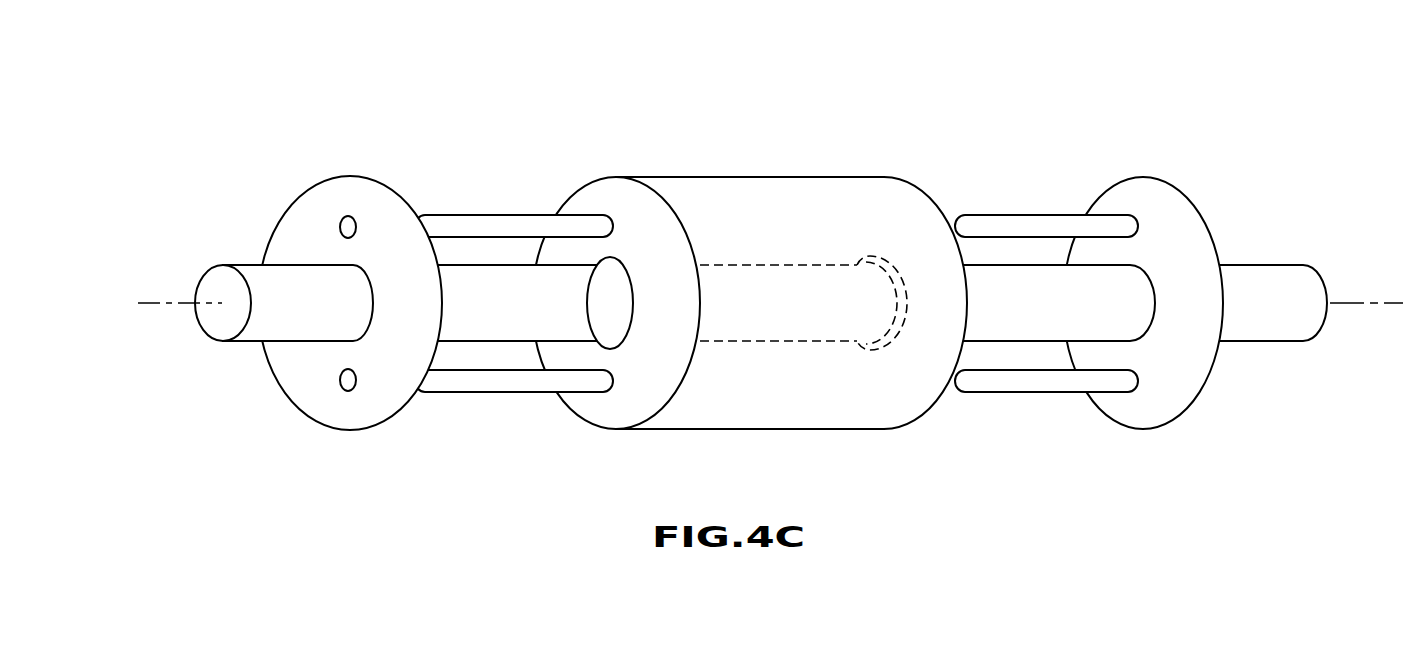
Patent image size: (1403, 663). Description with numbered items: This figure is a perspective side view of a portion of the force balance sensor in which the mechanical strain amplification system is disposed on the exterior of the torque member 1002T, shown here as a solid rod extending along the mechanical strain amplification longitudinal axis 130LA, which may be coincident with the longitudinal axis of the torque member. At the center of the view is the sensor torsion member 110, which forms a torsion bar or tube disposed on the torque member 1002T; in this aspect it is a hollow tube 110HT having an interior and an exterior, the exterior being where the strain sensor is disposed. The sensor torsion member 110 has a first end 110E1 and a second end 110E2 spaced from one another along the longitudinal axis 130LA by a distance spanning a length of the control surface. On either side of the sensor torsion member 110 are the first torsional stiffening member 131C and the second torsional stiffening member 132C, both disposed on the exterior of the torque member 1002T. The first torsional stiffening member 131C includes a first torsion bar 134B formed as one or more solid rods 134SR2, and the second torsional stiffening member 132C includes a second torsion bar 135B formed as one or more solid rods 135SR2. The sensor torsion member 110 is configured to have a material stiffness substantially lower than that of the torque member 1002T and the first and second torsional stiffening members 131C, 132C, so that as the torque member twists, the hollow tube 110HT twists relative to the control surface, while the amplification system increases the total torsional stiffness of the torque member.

The sensor torsion member 110 is at (740, 308).
The first end 110E1 is at (588, 425).
The second end 110E2 is at (910, 177).
The hollow tube 110HT is at (683, 177).
The first torsional stiffening member 131C is at (374, 247).
The second torsional stiffening member 132C is at (1175, 247).
The first torsion bar 134B is at (455, 193).
The solid rod 134SR2 is at (527, 215).
The second torsion bar 135B is at (982, 193).
The solid rod 135SR2 is at (1048, 215).
The torque member 1002T is at (1298, 265).
The mechanical strain amplification longitudinal axis 130LA is at (180, 305).